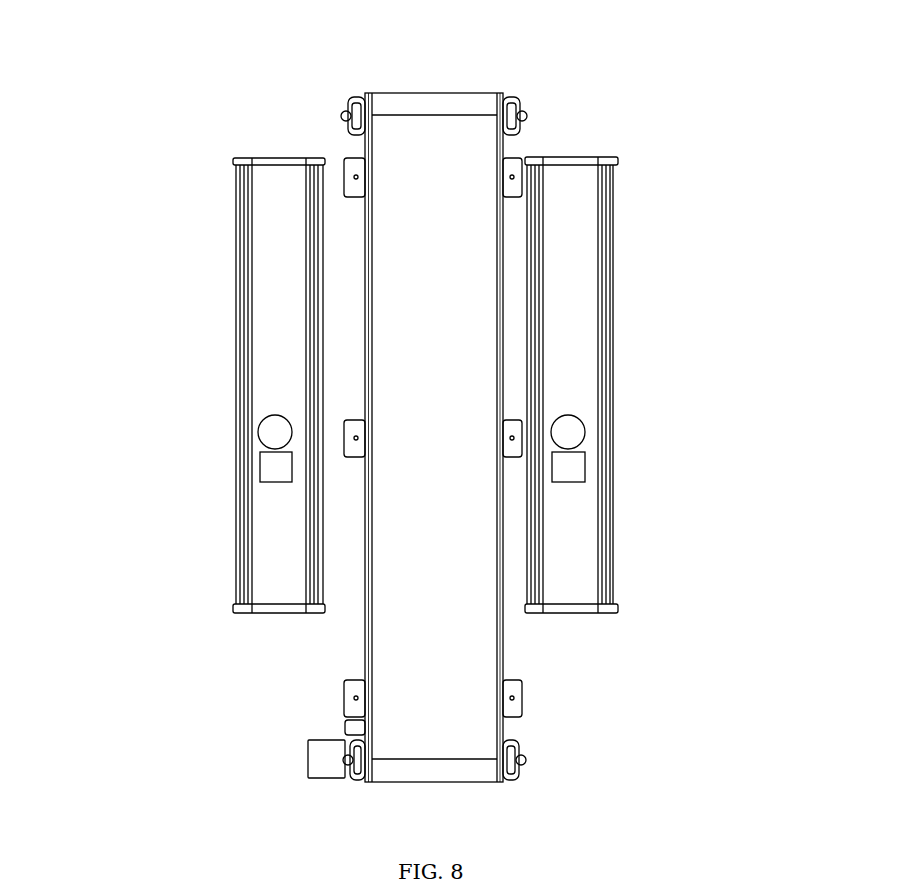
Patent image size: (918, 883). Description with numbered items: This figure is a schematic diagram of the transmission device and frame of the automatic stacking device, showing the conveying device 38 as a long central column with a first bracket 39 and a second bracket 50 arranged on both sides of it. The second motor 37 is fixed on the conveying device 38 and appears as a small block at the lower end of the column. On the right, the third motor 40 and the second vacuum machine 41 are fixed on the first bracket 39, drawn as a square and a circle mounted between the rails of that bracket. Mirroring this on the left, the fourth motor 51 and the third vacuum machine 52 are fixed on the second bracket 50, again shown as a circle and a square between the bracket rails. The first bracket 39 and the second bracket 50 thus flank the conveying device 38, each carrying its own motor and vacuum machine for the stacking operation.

The conveying device 38 is at (434, 396).
The second bracket 50 is at (236, 203).
The fourth motor 51 is at (165, 422).
The third vacuum machine 52 is at (169, 466).
The first bracket 39 is at (613, 207).
The second vacuum machine 41 is at (568, 431).
The third motor 40 is at (570, 470).
The second motor 37 is at (231, 759).